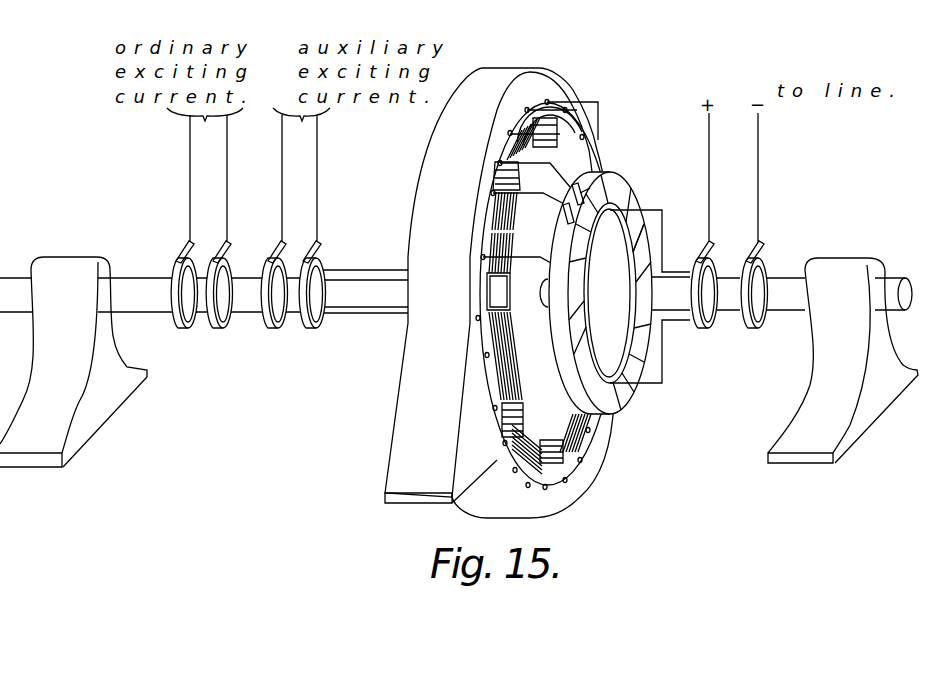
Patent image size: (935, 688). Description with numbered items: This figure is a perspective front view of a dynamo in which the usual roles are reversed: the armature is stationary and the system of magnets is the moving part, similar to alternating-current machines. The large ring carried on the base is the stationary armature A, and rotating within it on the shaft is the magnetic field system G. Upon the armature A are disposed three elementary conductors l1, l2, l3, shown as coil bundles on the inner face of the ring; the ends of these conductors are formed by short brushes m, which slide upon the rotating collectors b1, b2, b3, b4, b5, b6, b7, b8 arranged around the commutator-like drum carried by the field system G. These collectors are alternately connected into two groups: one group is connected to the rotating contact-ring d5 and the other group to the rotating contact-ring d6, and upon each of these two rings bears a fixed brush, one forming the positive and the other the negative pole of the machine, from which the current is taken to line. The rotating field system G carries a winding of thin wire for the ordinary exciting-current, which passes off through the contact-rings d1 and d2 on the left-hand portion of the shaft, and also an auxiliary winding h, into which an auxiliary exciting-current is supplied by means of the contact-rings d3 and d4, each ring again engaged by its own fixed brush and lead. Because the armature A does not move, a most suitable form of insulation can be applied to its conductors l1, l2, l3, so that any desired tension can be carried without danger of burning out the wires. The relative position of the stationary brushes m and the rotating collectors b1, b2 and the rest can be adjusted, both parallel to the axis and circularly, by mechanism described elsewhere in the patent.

The stationary armature A is at (500, 293).
The auxiliary winding h is at (337, 285).
The elementary conductor l1 is at (583, 60).
The elementary conductor l2 is at (605, 63).
The elementary conductor l3 is at (627, 63).
The magnetic field system G is at (591, 293).
The brush m is at (558, 223).
The collector b1 is at (573, 397).
The collector b2 is at (558, 327).
The collector b3 is at (560, 242).
The collector b4 is at (580, 193).
The collector b5 is at (627, 177).
The collector b6 is at (643, 227).
The collector b7 is at (647, 360).
The collector b8 is at (622, 408).
The contact-ring d1 is at (186, 330).
The contact-ring d2 is at (223, 330).
The contact-ring d3 is at (275, 330).
The contact-ring d4 is at (313, 330).
The rotating contact-ring d5 is at (705, 330).
The rotating contact-ring d6 is at (754, 330).